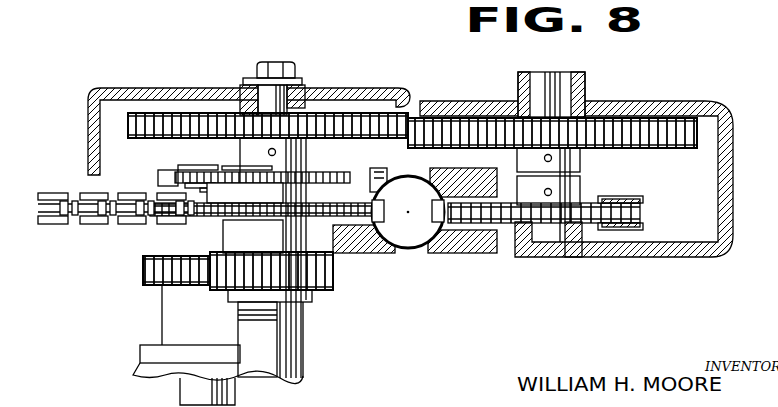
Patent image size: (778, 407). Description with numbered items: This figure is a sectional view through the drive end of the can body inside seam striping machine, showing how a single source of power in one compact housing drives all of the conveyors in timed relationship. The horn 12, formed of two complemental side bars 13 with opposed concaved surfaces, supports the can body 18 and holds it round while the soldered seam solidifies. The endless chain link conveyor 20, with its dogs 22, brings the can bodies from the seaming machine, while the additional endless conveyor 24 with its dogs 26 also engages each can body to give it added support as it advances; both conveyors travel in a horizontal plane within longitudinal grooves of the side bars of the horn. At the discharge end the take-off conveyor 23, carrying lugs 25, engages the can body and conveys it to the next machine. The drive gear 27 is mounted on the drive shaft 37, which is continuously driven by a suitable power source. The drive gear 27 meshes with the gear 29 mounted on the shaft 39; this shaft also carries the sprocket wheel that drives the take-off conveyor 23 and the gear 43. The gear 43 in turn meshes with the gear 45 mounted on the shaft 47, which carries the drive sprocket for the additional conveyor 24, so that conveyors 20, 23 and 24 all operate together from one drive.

The horn 12 is at (430, 253).
The side bars 13 is at (356, 254).
The can body 18 is at (405, 250).
The endless chain link conveyor 20 is at (88, 226).
The dogs 22 is at (398, 254).
The take-off conveyor 23 is at (178, 170).
The additional endless conveyor 24 is at (640, 210).
The lugs 25 is at (377, 176).
The dogs 26 is at (463, 231).
The drive gear 27 is at (143, 271).
The gear 29 is at (328, 292).
The drive shaft 37 is at (182, 382).
The shaft 39 is at (302, 340).
The gear 43 is at (156, 116).
The gear 45 is at (712, 114).
The shaft 47 is at (560, 73).